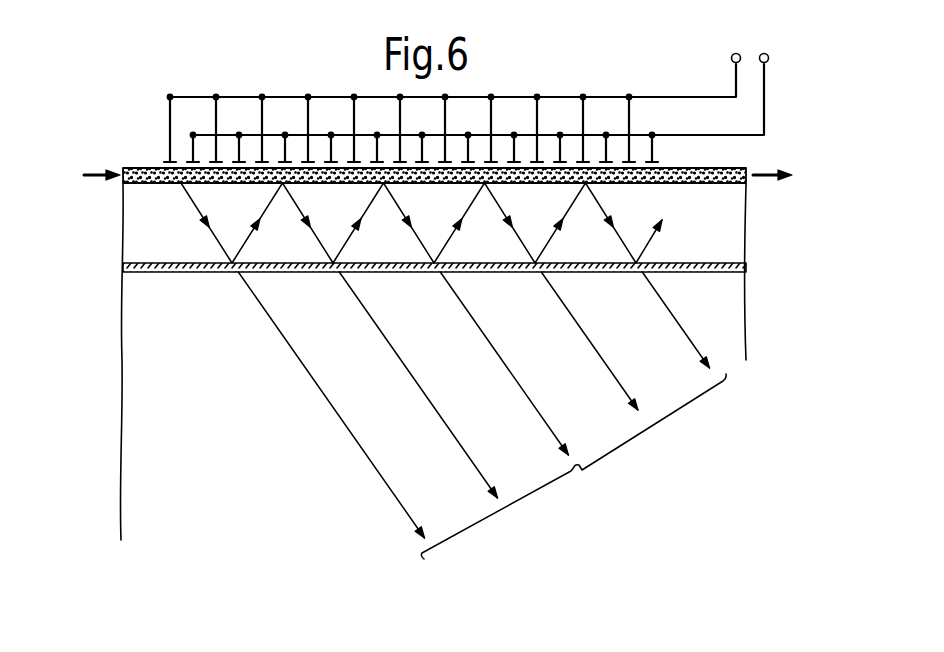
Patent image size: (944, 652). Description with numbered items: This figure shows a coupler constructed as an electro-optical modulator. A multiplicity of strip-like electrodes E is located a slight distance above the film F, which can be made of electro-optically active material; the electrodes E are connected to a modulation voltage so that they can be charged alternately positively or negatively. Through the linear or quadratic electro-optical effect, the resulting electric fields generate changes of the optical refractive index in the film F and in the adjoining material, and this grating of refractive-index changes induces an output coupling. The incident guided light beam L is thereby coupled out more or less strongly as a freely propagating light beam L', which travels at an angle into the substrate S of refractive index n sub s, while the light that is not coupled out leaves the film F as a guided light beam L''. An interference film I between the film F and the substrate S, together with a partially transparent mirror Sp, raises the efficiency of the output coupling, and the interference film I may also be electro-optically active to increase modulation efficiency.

The strip-like electrodes E is at (217, 162).
The incident guided light beam L is at (102, 160).
The guided light beam L'' is at (775, 160).
The freely propagating light beam L' is at (573, 466).
The interference film I is at (113, 190).
The film F is at (160, 184).
The partially transparent mirror Sp is at (176, 273).
The substrate S is at (144, 498).